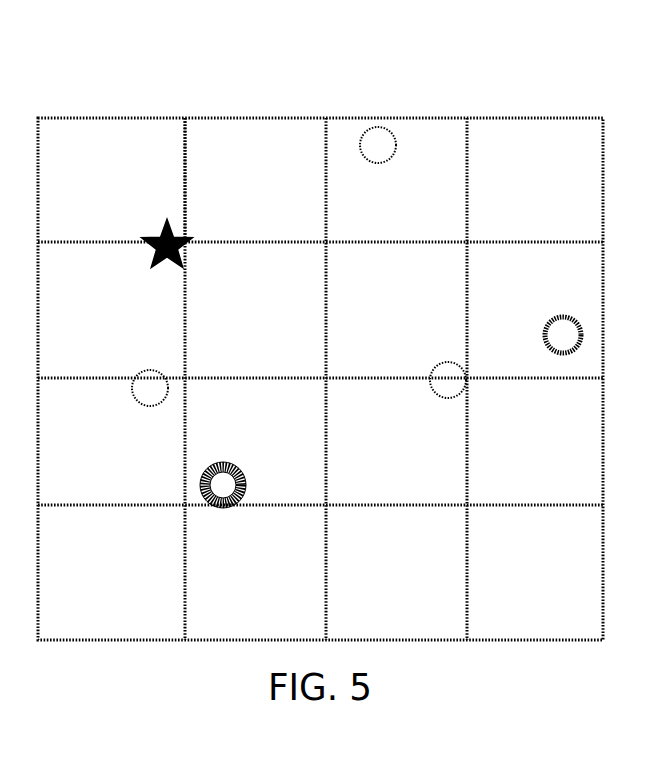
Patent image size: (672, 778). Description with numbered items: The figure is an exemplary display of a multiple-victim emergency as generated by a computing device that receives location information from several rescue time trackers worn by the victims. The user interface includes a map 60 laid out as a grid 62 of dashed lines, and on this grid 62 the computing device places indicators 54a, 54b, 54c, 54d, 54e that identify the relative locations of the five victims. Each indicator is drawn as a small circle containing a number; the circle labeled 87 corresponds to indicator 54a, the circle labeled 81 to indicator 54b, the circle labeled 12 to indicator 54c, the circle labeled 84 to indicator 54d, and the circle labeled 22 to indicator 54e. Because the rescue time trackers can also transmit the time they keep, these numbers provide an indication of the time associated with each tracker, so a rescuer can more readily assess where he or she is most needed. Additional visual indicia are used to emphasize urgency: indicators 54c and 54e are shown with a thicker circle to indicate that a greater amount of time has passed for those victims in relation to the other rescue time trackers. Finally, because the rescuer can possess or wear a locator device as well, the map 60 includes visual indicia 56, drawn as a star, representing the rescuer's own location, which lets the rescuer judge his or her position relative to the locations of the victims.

The map 60 is at (237, 117).
The grid 62 is at (183, 162).
The visual indicia 56 is at (185, 264).
The point of interest marker 81 is at (378, 145).
The point of interest marker 87 is at (150, 388).
The point of interest marker 12 is at (223, 485).
The point of interest marker 84 is at (448, 380).
The point of interest marker 22 is at (563, 335).
The indicator 54a is at (166, 401).
The indicator 54b is at (384, 166).
The indicator 54c is at (246, 497).
The indicator 54d is at (466, 394).
The indicator 54e is at (583, 352).